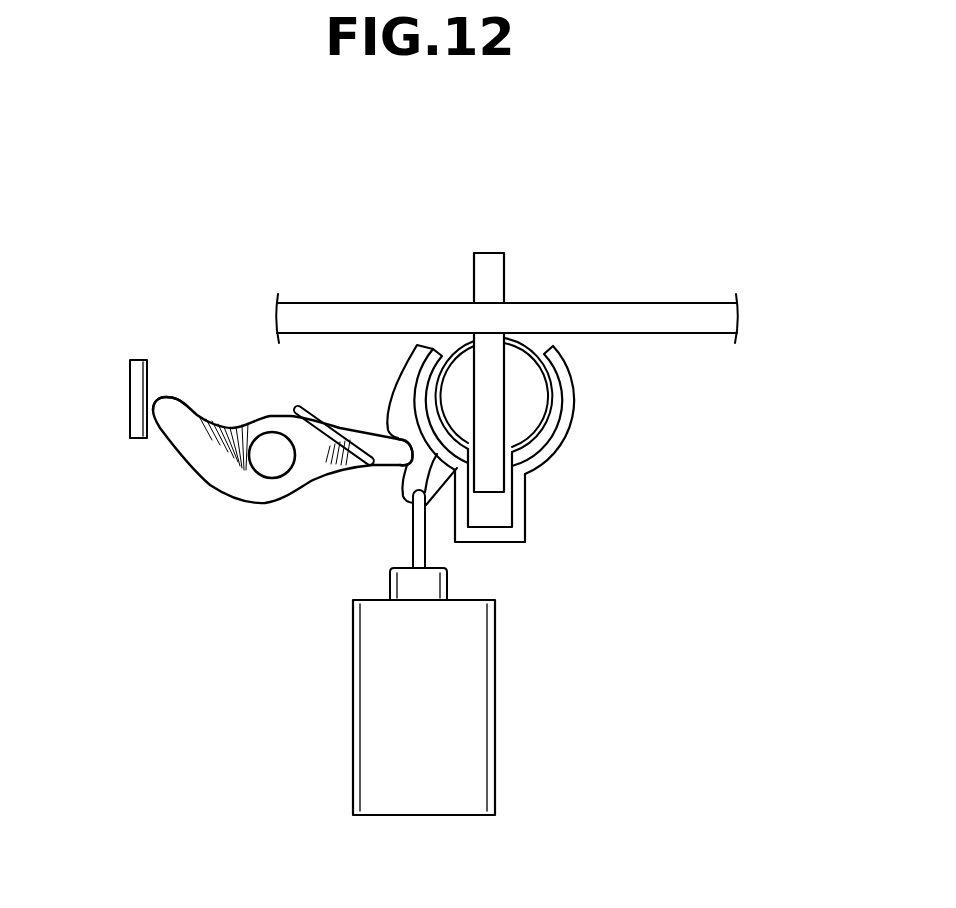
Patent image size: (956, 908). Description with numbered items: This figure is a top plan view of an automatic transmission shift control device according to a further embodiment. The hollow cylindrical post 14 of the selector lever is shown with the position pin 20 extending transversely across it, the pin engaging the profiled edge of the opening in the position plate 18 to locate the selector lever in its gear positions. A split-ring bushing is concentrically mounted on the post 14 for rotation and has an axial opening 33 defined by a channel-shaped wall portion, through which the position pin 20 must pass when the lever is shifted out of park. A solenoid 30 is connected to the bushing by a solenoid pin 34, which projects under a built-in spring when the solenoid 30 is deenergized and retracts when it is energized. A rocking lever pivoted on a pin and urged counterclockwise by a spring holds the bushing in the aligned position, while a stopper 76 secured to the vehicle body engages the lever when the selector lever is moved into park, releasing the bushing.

The position plate 18 is at (622, 307).
The position pin 20 is at (497, 268).
The post 14 is at (552, 387).
The axial opening 33 is at (497, 512).
The solenoid pin 34 is at (418, 552).
The solenoid 30 is at (470, 680).
The stopper 76 is at (132, 415).